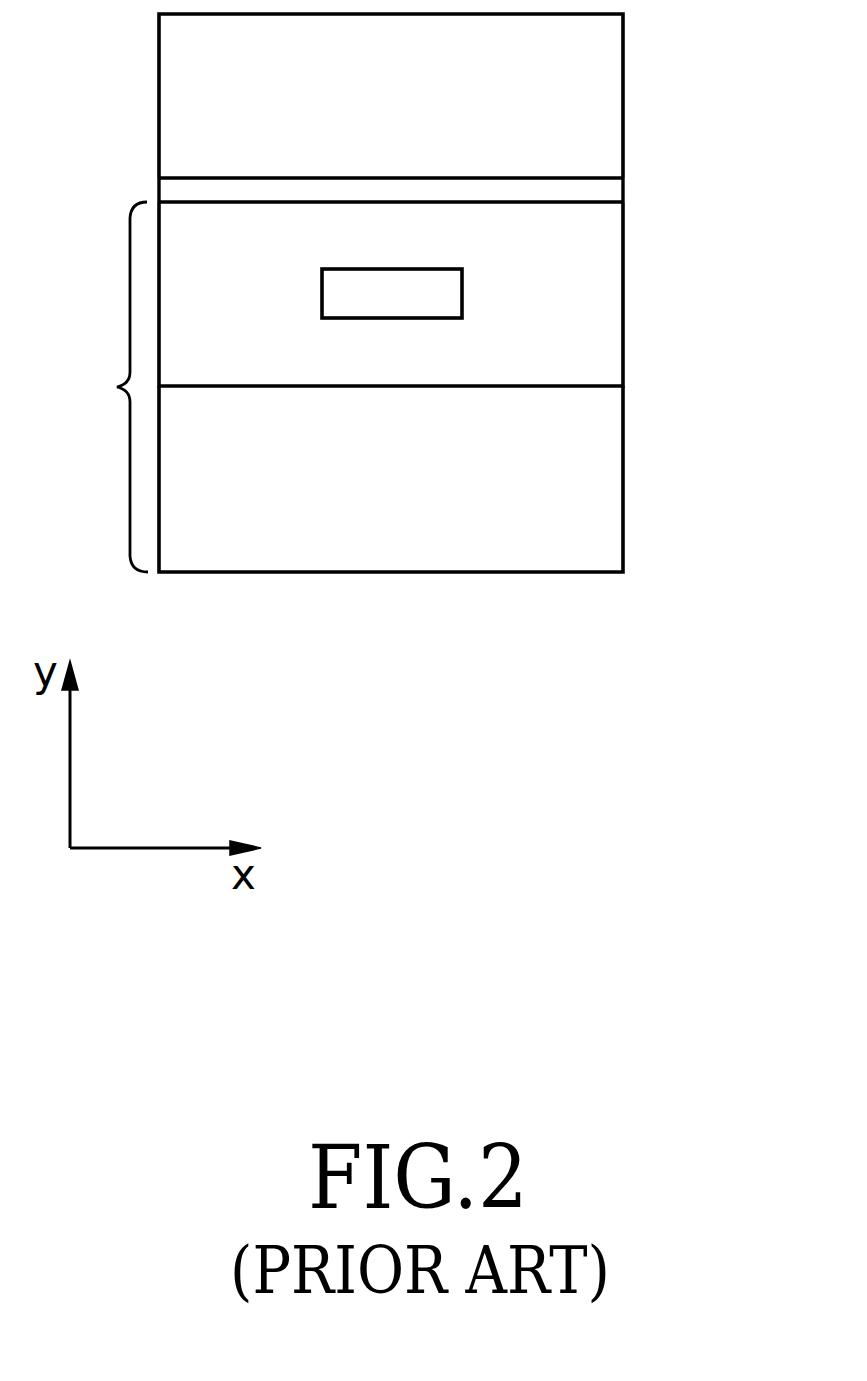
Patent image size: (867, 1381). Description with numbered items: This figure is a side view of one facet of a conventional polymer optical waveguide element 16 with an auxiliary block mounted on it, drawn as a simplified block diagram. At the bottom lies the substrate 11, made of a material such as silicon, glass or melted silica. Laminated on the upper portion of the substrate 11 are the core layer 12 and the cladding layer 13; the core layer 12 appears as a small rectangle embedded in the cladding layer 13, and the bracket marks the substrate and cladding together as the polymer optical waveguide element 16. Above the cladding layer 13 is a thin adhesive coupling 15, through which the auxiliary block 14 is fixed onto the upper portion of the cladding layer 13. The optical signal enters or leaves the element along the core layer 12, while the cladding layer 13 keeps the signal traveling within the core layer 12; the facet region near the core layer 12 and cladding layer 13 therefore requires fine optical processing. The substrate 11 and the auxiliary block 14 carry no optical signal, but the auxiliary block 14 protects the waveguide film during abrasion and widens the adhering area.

The substrate layer 11 is at (603, 477).
The core layer 12 is at (432, 296).
The cladding layer 13 is at (597, 362).
The auxiliary block 14 is at (593, 99).
The adhesive coupling 15 is at (595, 191).
The polymer optical waveguide element 16 is at (105, 387).